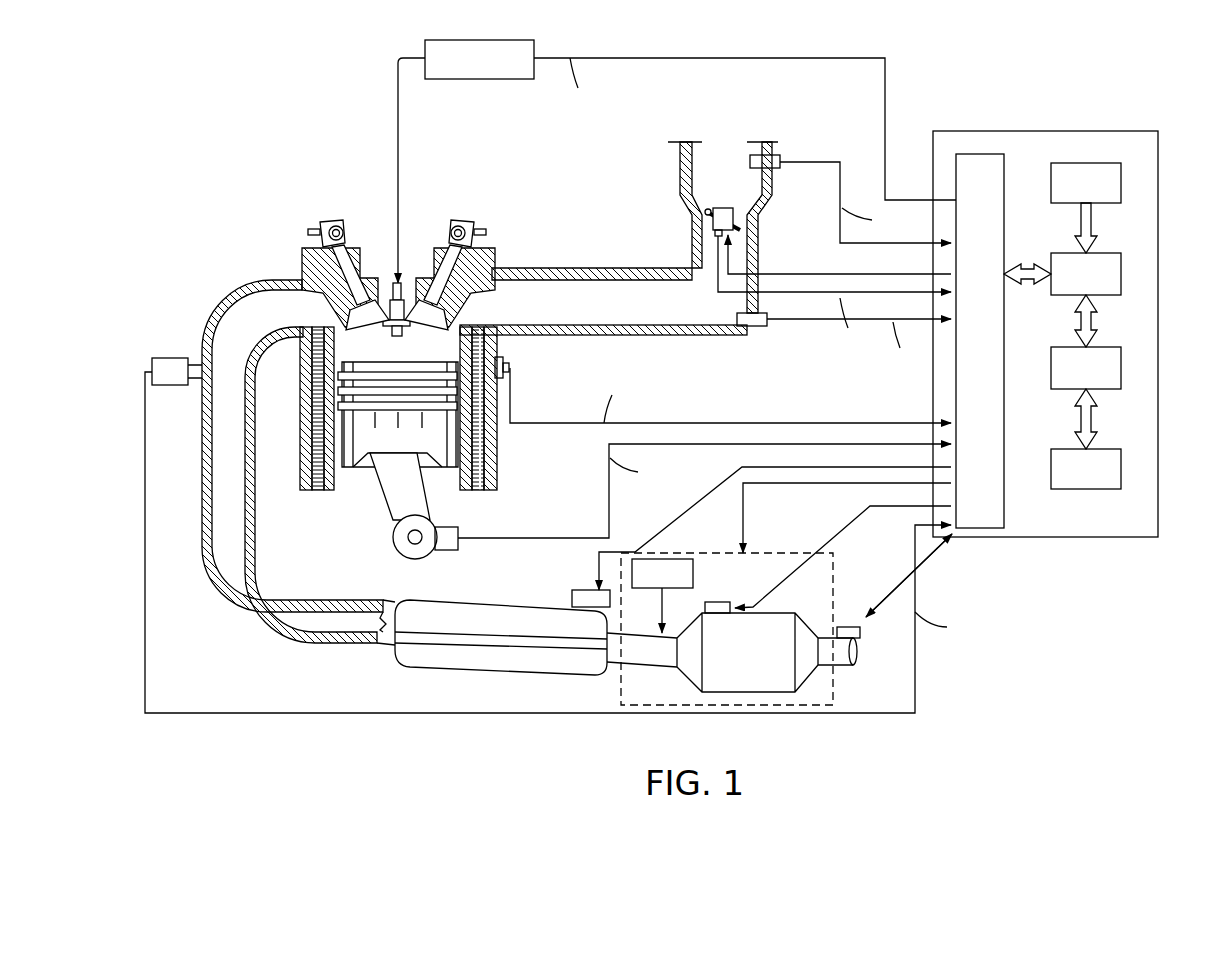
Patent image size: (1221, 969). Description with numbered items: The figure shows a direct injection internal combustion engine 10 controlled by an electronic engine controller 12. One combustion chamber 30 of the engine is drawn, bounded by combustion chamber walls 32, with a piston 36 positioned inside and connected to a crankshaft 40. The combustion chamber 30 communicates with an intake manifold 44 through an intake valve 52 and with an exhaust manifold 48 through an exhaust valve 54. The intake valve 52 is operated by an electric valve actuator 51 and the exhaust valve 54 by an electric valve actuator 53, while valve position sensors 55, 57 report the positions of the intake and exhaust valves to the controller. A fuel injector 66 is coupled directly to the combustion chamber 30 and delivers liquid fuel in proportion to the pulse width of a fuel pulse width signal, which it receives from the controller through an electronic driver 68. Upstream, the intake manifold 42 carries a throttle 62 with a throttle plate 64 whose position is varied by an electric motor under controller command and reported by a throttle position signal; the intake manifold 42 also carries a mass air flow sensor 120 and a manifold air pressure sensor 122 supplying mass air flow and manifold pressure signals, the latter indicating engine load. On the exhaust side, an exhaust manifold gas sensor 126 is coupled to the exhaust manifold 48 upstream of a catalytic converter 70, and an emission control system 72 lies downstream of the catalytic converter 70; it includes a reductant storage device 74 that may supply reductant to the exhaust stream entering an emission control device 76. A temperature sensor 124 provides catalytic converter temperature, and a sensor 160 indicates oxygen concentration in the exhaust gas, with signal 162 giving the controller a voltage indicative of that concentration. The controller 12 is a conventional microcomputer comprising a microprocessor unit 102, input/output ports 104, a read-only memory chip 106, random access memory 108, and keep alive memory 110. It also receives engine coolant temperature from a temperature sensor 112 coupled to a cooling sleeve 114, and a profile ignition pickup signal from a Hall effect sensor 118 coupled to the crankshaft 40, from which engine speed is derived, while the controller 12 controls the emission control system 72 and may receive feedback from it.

The direct injection internal combustion engine 10 is at (233, 128).
The electronic engine controller 12 is at (1158, 132).
The combustion chamber 30 is at (365, 352).
The combustion chamber walls 32 is at (337, 484).
The piston 36 is at (371, 455).
The crankshaft 40 is at (394, 543).
The intake manifold 42 is at (737, 186).
The intake manifold 44 is at (671, 313).
The exhaust manifold 48 is at (290, 313).
The electric valve actuator 51 is at (461, 222).
The intake valve 52 is at (447, 318).
The electric valve actuator 53 is at (334, 222).
The exhaust valve 54 is at (347, 318).
The valve position sensor 55 is at (487, 233).
The valve position sensor 57 is at (316, 233).
The throttle 62 is at (737, 216).
The throttle plate 64 is at (707, 212).
The fuel injector 66 is at (403, 288).
The electronic driver 68 is at (480, 79).
The catalytic converter 70 is at (530, 600).
The emission control system 72 is at (783, 553).
The reductant storage device 74 is at (692, 559).
The emission control device 76 is at (786, 613).
The microprocessor unit 102 is at (1121, 273).
The input/output ports 104 is at (977, 154).
The read-only memory chip 106 is at (1121, 183).
The random access memory 108 is at (1121, 368).
The keep alive memory 110 is at (1121, 468).
The temperature sensor 112 is at (509, 368).
The cooling sleeve 114 is at (480, 463).
The Hall effect sensor 118 is at (460, 545).
The mass air flow sensor 120 is at (780, 155).
The manifold air pressure sensor 122 is at (770, 326).
The temperature sensor 124 is at (578, 588).
The exhaust manifold gas sensor 126 is at (170, 357).
The sensor 160 is at (862, 635).
The signal 162 is at (884, 576).